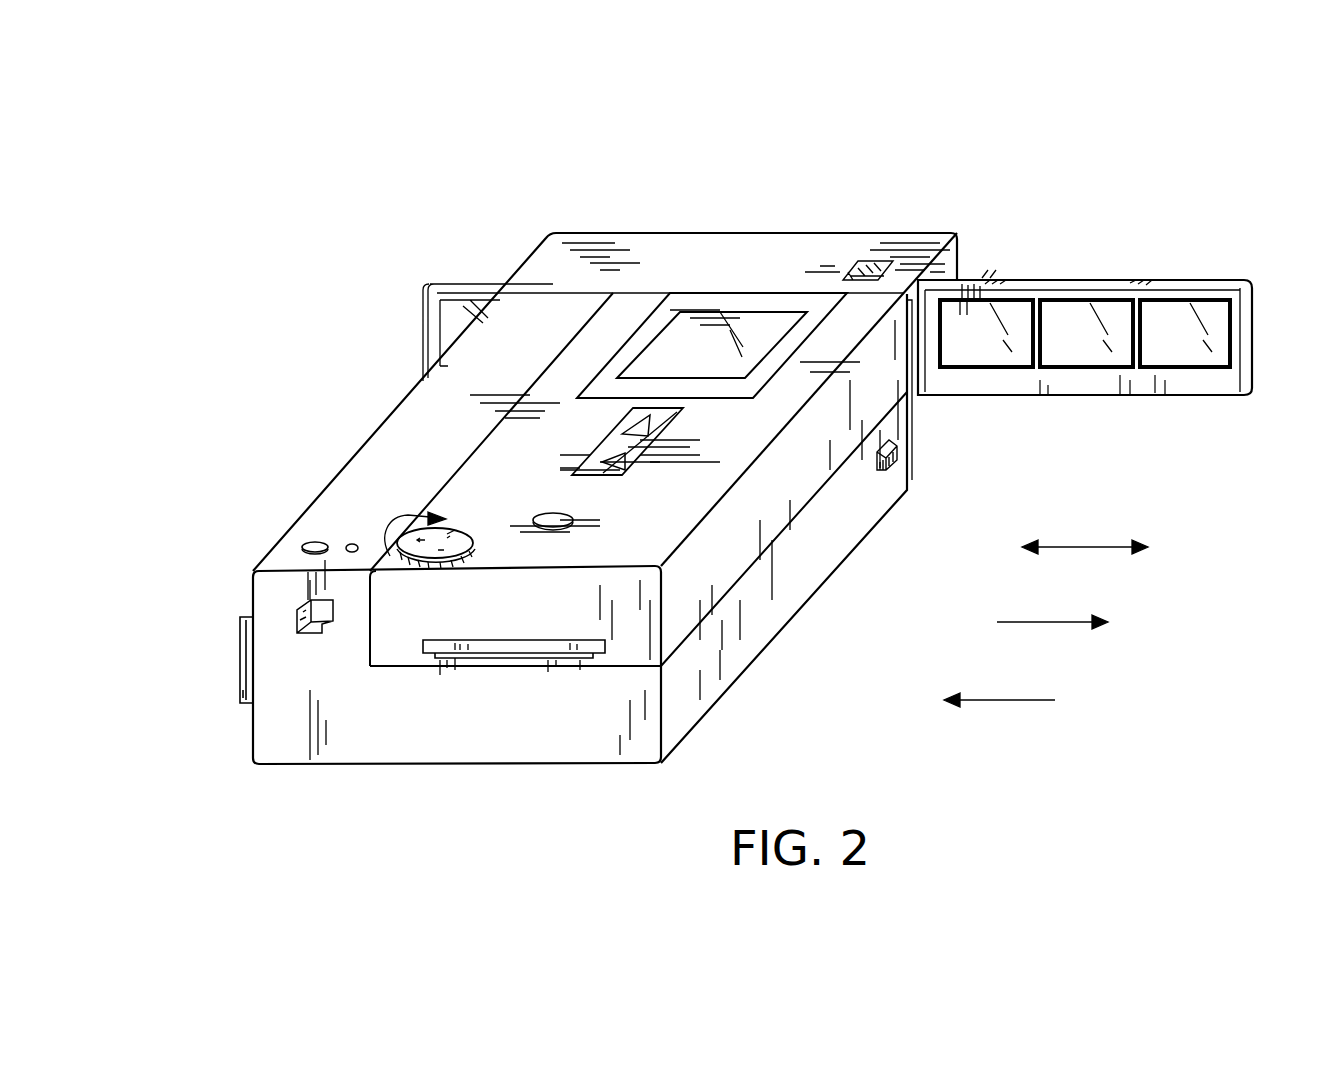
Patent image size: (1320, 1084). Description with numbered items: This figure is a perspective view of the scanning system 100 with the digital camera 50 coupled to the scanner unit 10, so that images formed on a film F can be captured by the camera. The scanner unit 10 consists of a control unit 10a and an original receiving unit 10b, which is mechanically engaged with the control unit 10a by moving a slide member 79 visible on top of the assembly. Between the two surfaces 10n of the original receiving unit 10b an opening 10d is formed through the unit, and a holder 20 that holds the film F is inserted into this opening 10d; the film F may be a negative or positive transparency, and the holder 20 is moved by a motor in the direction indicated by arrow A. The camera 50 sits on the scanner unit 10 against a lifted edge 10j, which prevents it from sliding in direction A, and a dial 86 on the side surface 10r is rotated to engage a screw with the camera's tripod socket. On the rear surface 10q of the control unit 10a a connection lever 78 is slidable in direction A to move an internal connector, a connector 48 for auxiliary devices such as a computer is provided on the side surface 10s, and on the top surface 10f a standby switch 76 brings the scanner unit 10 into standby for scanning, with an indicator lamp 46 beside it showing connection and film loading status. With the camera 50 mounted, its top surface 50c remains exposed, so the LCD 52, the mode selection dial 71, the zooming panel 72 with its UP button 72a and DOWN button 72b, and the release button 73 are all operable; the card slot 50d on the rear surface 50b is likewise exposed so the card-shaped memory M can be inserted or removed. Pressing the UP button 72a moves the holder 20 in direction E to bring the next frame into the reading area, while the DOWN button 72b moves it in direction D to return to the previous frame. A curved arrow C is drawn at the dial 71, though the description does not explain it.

The scanner unit 10 is at (452, 232).
The control unit 10a is at (360, 755).
The original receiving unit 10b is at (697, 245).
The opening 10d is at (922, 382).
The top surface of the control unit 10f is at (424, 416).
The lifted edge 10j is at (706, 712).
The surfaces of the original receiving unit 10n is at (528, 258).
The rear surface of the control unit 10q is at (308, 752).
The side surface of the dropped portion 10r is at (748, 624).
The side surface 10s is at (250, 592).
The film holder 20 is at (1085, 326).
The indicator lamp 46 is at (356, 543).
The connector 48 is at (240, 666).
The digital camera 50 is at (637, 632).
The rear surface of the digital camera 50b is at (402, 624).
The top surface of the digital camera 50c is at (814, 366).
The card slot 50d is at (492, 645).
The LCD 52 is at (752, 328).
The mode selection dial 71 is at (464, 530).
The zooming panel 72 is at (633, 455).
The UP button 72a is at (652, 440).
The DOWN button 72b is at (624, 470).
The release button 73 is at (578, 528).
The standby switch 76 is at (310, 540).
The connection lever 78 is at (298, 626).
The slide member 79 is at (876, 260).
The dial 86 is at (902, 468).
The scanning system 100 is at (998, 180).
The direction A is at (1085, 533).
The rotation direction C is at (420, 512).
The direction D is at (1052, 610).
The direction E is at (999, 688).
The film F is at (1168, 348).
The card-shaped memory M is at (530, 655).